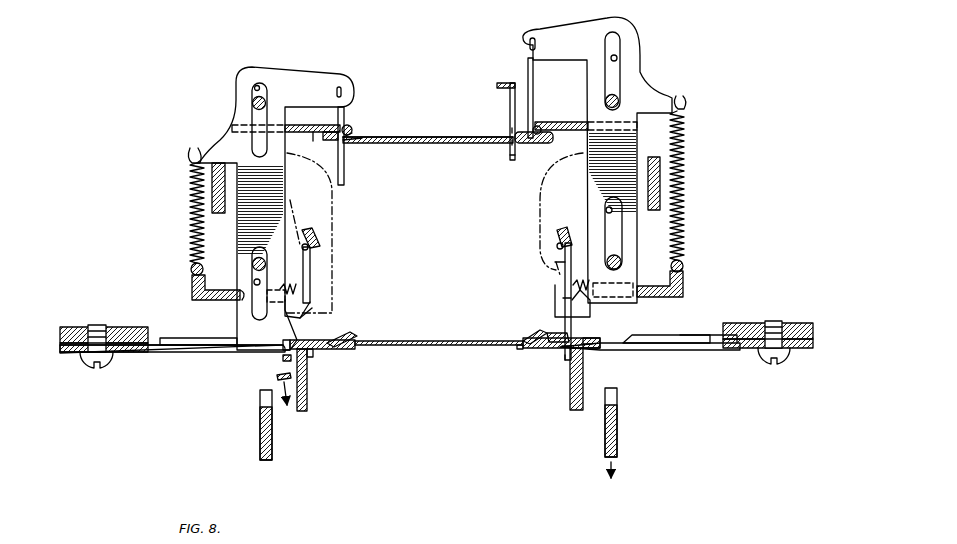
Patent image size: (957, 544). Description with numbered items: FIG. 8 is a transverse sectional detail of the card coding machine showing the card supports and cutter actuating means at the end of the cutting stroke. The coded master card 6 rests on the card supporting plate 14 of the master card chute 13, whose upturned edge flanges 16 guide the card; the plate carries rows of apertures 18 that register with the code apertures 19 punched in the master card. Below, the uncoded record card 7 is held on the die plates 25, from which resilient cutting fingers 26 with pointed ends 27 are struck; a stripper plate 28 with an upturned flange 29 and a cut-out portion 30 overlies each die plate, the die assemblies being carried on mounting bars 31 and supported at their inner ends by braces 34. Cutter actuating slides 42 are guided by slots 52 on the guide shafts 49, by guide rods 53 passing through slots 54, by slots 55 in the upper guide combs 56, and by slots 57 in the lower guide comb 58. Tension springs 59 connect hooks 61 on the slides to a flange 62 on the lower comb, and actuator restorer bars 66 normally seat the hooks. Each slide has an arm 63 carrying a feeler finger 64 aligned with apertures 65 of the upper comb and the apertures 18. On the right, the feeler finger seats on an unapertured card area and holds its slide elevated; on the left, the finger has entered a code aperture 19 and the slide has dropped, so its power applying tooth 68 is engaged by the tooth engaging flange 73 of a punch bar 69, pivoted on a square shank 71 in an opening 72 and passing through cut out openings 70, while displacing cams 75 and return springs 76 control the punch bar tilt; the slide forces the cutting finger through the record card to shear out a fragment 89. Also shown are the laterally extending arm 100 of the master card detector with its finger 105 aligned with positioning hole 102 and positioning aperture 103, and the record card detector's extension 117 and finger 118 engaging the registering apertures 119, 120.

The coded master card 6 is at (423, 137).
The uncoded record card 7 is at (410, 346).
The master card chute 13 is at (364, 137).
The card supporting plate 14 is at (430, 144).
The edge flanges 16 is at (320, 125).
The apertures 18 is at (344, 141).
The code apertures 19 is at (354, 132).
The die plates 25 is at (310, 352).
The cutting fingers 26 is at (215, 354).
The pointed end 27 is at (283, 360).
The stripper plate 28 is at (340, 338).
The upturned flange 29 is at (357, 336).
The cut-out portion 30 is at (288, 341).
The mounting bars 31 is at (90, 325).
The braces 34 is at (308, 398).
The cutter actuating slides 42 is at (234, 237).
The guide shafts 49 is at (251, 103).
The slot 52 is at (259, 84).
The guide rods 53 is at (252, 265).
The slots 54 is at (252, 282).
The slots 55 is at (250, 130).
The upper guide combs 56 is at (313, 133).
The slots 57 is at (240, 298).
The lower guide comb 58 is at (192, 297).
The tension springs 59 is at (190, 212).
The hooks 61 is at (188, 155).
The flange 62 is at (190, 268).
The arm 63 is at (310, 82).
The feeler fingers 64 is at (344, 180).
The apertures 65 is at (349, 126).
The actuator restorer bars 66 is at (212, 183).
The power applying tooth 68 is at (302, 316).
The punch bar 69 is at (310, 255).
The cut out openings 70 is at (335, 200).
The square shanks 71 is at (319, 238).
The openings 72 is at (309, 228).
The tooth engaging flanges 73 is at (302, 312).
The punch bar displacing cams 75 is at (292, 205).
The return springs 76 is at (580, 286).
The fragment 89 is at (283, 383).
The laterally extending arm 100 is at (497, 84).
The positioning hole 102 is at (512, 143).
The positioning aperture 103 is at (512, 131).
The finger 105 is at (514, 160).
The extension 117 is at (565, 300).
The finger 118 is at (567, 362).
The aperture 119 is at (565, 350).
The aperture 120 is at (586, 349).